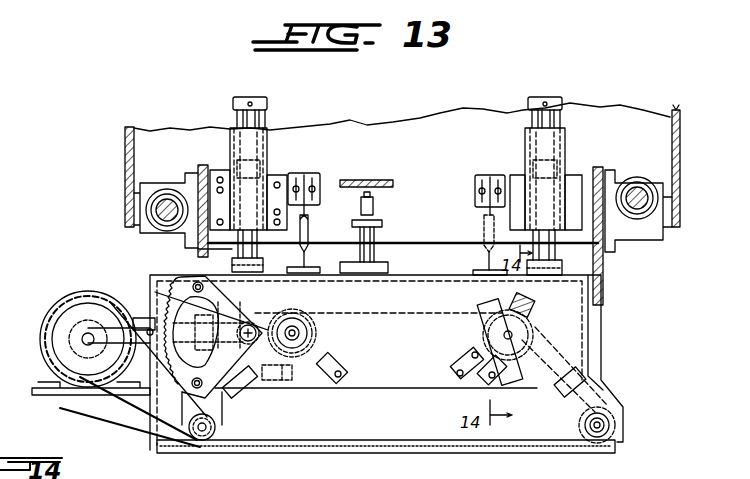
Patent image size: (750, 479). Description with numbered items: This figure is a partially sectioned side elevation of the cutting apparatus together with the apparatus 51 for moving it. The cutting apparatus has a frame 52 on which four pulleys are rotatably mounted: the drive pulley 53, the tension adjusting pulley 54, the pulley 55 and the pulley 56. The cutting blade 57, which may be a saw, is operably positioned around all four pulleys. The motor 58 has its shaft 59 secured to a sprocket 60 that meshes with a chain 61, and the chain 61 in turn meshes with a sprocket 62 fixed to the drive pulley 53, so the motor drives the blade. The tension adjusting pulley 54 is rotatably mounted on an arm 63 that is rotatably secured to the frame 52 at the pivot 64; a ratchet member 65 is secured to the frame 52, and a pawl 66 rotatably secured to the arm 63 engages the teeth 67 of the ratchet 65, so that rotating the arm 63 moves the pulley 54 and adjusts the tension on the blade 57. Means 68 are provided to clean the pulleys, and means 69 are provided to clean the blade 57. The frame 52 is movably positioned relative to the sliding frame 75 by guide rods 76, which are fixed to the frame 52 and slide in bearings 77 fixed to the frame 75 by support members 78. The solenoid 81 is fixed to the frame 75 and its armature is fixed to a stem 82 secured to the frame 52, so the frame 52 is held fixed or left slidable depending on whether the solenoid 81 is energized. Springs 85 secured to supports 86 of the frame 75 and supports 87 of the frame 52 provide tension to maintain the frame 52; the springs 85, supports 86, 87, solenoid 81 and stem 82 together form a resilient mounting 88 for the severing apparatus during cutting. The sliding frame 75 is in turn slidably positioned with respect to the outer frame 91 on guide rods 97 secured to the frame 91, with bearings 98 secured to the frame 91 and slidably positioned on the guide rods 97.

The apparatus for moving cutting means 51 is at (488, 108).
The frame 52 is at (386, 386).
The drive pulley 53 is at (215, 448).
The tension adjusting pulley 54 is at (314, 334).
The pulley 55 is at (535, 343).
The pulley 56 is at (622, 433).
The cutting blade 57 is at (440, 315).
The motor 58 is at (55, 315).
The shaft 59 is at (72, 339).
The sprocket 60 is at (66, 408).
The chain 61 is at (112, 413).
The sprocket 62 is at (197, 441).
The arm 63 is at (97, 331).
The pivot of arm 64 is at (256, 328).
The ratchet member 65 is at (155, 292).
The pawl 66 is at (138, 318).
The teeth 67 is at (173, 288).
The pulley cleaning means 68 is at (248, 395).
The blade cleaning means 69 is at (235, 295).
The sliding frame 75 is at (437, 192).
The guide rods 76 is at (250, 98).
The bearings 77 is at (243, 150).
The support members 78 is at (274, 186).
The solenoid 81 is at (376, 220).
The stem 82 is at (376, 252).
The springs 85 is at (309, 237).
The supports 86 is at (311, 178).
The supports 87 is at (320, 274).
The resilient mounting 88 is at (445, 216).
The frame 91 is at (157, 138).
The guide rods 97 is at (167, 200).
The bearings 98 is at (155, 210).